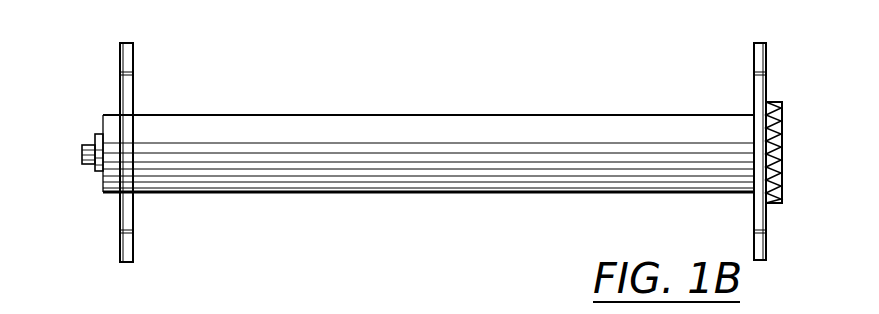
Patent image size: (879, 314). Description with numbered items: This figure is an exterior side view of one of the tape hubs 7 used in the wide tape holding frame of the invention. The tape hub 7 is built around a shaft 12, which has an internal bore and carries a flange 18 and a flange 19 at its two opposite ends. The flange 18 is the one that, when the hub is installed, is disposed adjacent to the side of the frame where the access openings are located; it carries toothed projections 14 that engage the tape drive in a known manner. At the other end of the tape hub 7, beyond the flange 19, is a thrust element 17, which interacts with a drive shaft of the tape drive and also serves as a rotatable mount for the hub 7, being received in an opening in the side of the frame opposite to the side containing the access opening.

The tape hub 7 is at (440, 101).
The shaft 12 is at (250, 135).
The toothed projections 14 is at (783, 123).
The thrust element 17 is at (84, 148).
The flange 18 is at (758, 90).
The flange 19 is at (127, 88).